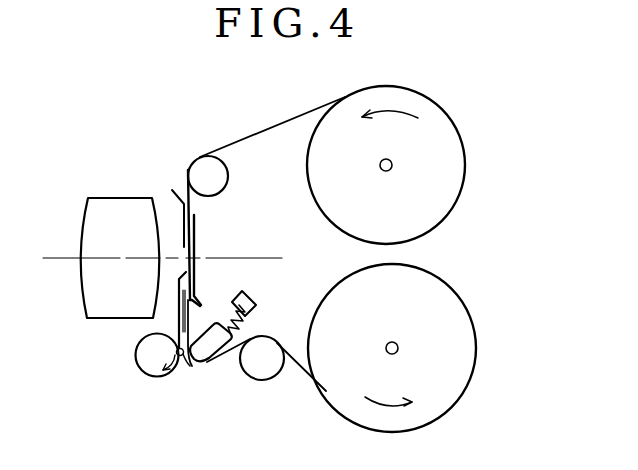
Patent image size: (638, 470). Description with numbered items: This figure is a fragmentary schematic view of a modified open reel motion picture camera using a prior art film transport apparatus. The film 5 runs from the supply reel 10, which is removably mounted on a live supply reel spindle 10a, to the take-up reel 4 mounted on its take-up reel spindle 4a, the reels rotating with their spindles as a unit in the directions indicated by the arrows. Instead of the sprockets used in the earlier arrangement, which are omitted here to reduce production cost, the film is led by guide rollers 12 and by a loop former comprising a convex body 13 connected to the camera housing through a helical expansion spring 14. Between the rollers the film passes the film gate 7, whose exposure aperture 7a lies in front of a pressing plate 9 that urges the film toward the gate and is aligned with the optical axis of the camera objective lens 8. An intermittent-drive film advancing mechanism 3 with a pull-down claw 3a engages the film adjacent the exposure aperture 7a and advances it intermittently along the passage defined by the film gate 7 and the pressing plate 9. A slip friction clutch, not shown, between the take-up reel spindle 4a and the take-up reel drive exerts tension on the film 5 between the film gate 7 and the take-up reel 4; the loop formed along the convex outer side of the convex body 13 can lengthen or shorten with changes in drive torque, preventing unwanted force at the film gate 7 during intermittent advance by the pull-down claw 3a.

The intermittent-drive film advancing mechanism 3 is at (142, 365).
The pull-down claw 3a is at (183, 363).
The take-up reel 4 is at (457, 380).
The take-up reel spindle 4a is at (398, 348).
The film 5 is at (267, 125).
The film gate 7 is at (182, 190).
The exposure aperture 7a is at (197, 262).
The camera objective lens 8 is at (113, 203).
The pressing plate 9 is at (203, 219).
The supply reel 10 is at (448, 195).
The supply reel spindle 10a is at (392, 165).
The guide roller 12 is at (222, 177).
The convex body 13 is at (210, 353).
The helical expansion spring 14 is at (236, 326).